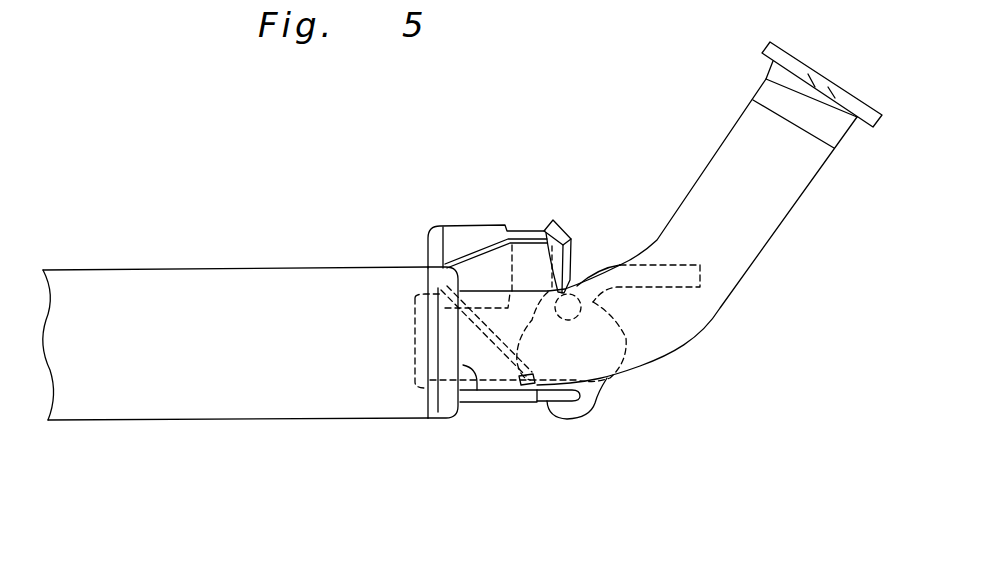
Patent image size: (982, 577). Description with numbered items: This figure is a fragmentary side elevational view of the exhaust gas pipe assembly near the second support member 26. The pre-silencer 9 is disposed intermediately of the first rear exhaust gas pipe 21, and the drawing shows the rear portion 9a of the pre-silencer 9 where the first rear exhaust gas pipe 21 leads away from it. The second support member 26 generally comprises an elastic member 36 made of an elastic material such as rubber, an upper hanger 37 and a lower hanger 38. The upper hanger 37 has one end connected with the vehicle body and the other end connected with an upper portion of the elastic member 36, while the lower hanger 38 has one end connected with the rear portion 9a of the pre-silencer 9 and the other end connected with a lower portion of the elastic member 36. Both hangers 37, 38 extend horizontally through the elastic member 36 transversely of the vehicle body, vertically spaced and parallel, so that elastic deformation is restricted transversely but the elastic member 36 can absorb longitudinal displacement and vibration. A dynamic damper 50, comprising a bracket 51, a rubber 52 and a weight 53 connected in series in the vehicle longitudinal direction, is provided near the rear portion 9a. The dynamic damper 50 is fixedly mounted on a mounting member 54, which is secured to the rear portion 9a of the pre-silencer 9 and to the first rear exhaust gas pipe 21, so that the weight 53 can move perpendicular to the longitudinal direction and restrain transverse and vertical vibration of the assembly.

The pre-silencer 9 is at (230, 260).
The rear portion of the pre-silencer 9a is at (473, 402).
The first rear exhaust gas pipe 21 is at (769, 240).
The second support member 26 is at (520, 416).
The elastic member 36 is at (593, 405).
The upper hanger 37 is at (653, 265).
The lower hanger 38 is at (562, 392).
The dynamic damper 50 is at (512, 212).
The bracket 51 is at (566, 231).
The rubber 52 is at (534, 229).
The weight 53 is at (470, 223).
The mounting member 54 is at (453, 230).